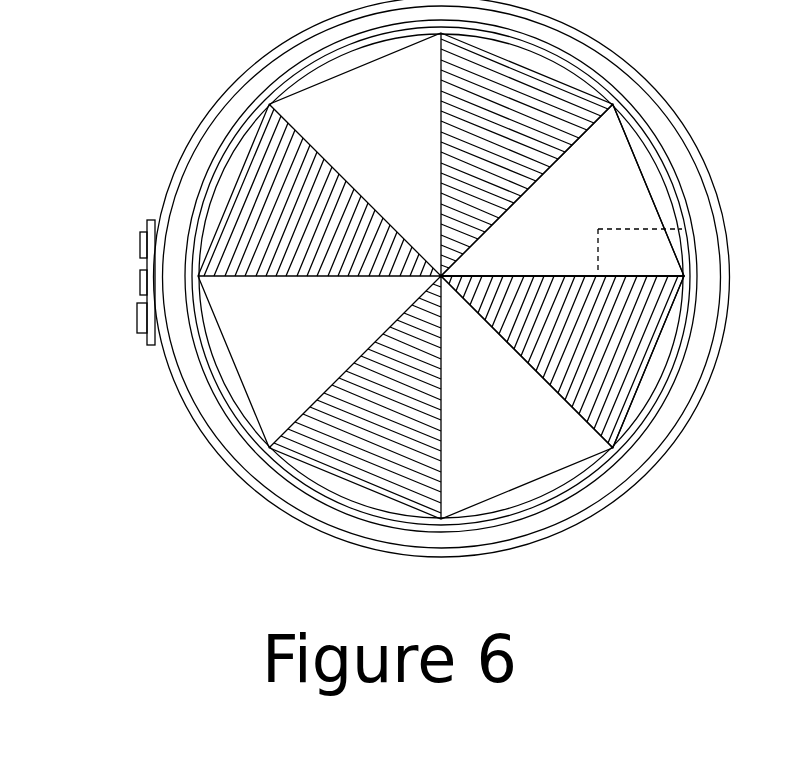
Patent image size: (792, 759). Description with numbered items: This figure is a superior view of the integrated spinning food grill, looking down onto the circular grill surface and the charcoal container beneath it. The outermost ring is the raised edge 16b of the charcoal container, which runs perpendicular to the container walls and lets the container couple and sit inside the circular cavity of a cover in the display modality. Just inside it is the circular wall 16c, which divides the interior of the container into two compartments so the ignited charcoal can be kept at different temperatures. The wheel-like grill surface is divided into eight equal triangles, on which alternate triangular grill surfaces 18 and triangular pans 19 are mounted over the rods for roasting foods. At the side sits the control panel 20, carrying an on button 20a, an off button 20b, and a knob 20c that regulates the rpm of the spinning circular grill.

The raised edge 16b is at (218, 432).
The circular wall 16c is at (676, 322).
The triangular grill surface 18 is at (610, 397).
The triangular pan 19 is at (643, 187).
The control panel 20 is at (147, 350).
The on button 20a is at (133, 237).
The off button 20b is at (132, 270).
The knob 20c is at (133, 317).